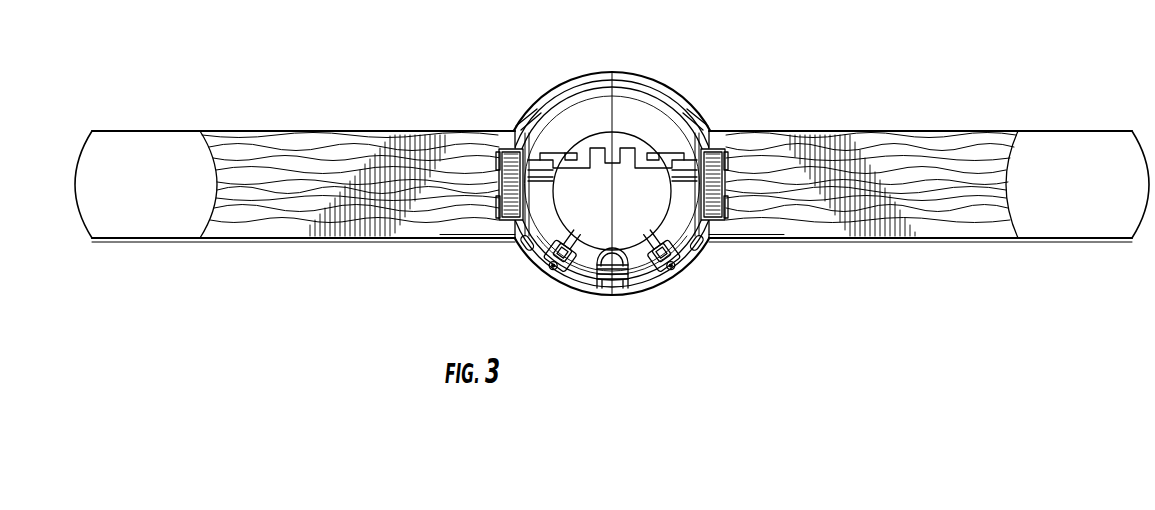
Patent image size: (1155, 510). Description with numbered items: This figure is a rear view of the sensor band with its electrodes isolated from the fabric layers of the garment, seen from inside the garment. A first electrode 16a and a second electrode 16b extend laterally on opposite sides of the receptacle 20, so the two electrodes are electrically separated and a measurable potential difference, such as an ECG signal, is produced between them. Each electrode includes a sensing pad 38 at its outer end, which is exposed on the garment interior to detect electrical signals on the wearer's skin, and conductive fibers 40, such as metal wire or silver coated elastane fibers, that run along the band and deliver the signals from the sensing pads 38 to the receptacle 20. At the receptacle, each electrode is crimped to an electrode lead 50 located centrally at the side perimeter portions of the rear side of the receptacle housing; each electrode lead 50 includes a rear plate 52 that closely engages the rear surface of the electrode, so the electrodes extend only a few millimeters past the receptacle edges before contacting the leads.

The first electrode 16a is at (443, 142).
The second electrode 16b is at (970, 142).
The receptacle 20 is at (660, 287).
The sensing pad 38 is at (142, 228).
The conductive fibers 40 is at (852, 147).
The electrode lead 50 is at (720, 188).
The rear plate 52 is at (513, 212).